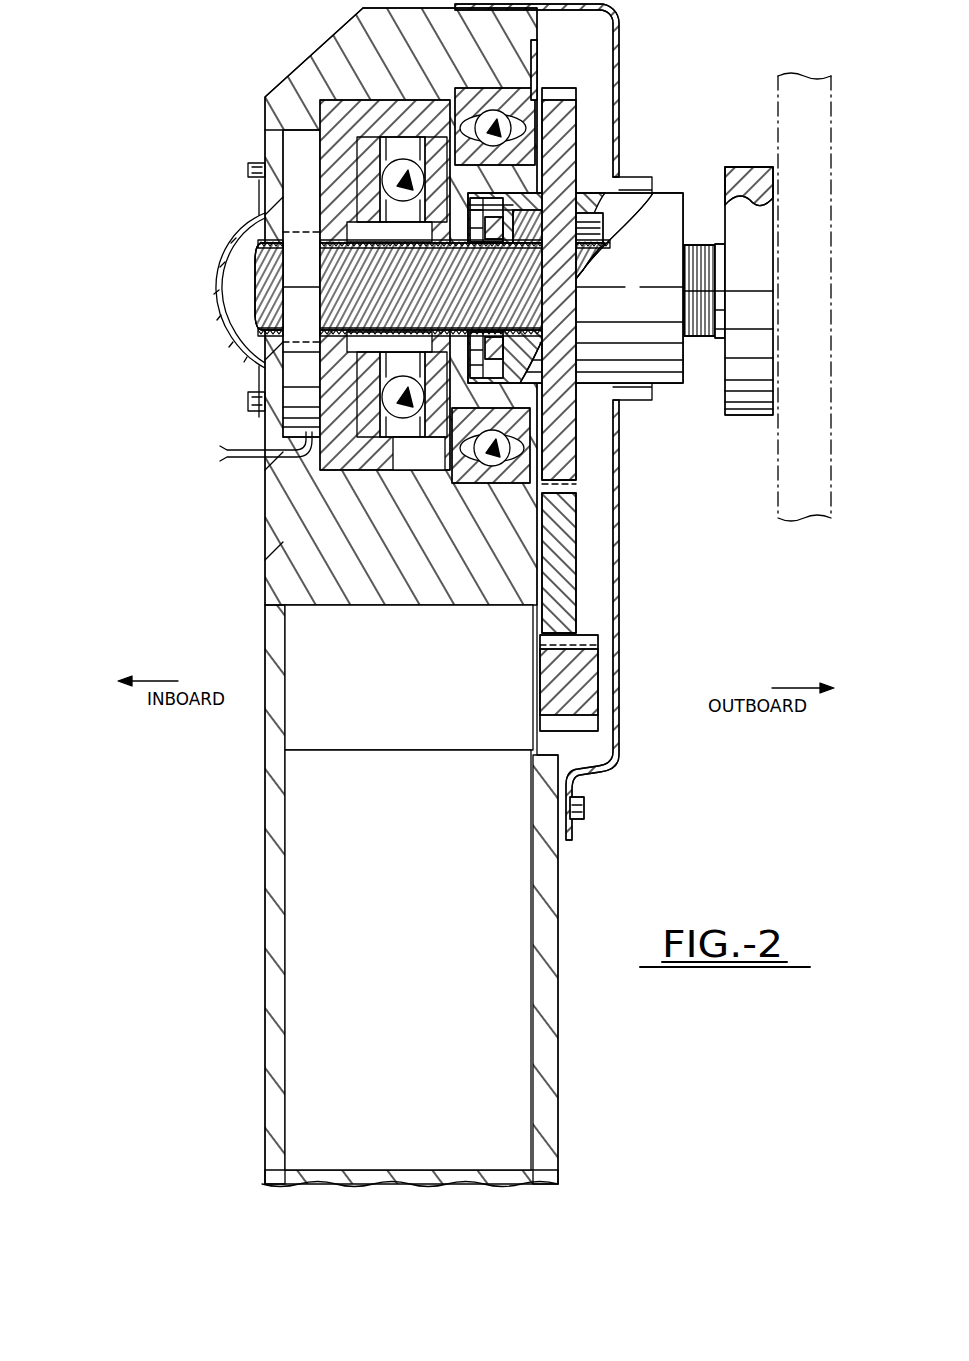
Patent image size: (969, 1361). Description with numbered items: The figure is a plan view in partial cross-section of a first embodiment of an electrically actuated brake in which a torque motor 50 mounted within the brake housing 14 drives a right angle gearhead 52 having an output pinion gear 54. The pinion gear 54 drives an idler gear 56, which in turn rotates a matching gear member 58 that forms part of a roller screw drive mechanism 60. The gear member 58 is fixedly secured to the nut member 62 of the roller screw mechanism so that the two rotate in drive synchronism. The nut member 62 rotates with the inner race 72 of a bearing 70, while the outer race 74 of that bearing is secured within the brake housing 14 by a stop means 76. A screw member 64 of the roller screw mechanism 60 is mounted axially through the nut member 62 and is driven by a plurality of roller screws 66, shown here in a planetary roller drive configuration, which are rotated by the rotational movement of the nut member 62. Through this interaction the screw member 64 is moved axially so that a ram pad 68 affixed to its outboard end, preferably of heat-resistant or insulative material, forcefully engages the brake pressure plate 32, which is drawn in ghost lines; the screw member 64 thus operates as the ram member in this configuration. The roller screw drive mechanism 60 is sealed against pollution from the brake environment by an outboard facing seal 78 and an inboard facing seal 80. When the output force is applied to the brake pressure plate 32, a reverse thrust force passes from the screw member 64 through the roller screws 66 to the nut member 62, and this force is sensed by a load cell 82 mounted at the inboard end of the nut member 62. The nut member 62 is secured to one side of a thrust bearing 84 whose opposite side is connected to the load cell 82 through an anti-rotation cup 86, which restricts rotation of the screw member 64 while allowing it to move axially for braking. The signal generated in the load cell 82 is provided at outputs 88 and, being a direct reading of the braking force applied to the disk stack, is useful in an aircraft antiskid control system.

The brake housing 14 is at (355, 597).
The brake pressure plate 32 is at (835, 297).
The torque motor 50 is at (408, 960).
The right angle gearhead 52 is at (409, 677).
The output pinion gear 54 is at (612, 670).
The idler gear 56 is at (609, 563).
The gear member 58 is at (611, 266).
The roller screw drive mechanism 60 is at (739, 67).
The nut member 62 is at (589, 259).
The screw member 64 is at (463, 250).
The roller screws 66 is at (574, 272).
The ram pad 68 is at (747, 319).
The bearing 70 is at (462, 476).
The inner race 72 is at (418, 473).
The outer race 74 is at (495, 310).
The stop means 76 is at (563, 59).
The outboard facing seal 78 is at (572, 422).
The inboard facing seal 80 is at (203, 290).
The load cell 82 is at (287, 302).
The thrust bearing 84 is at (388, 257).
The anti-rotation cup 86 is at (318, 54).
The outputs 88 is at (252, 464).